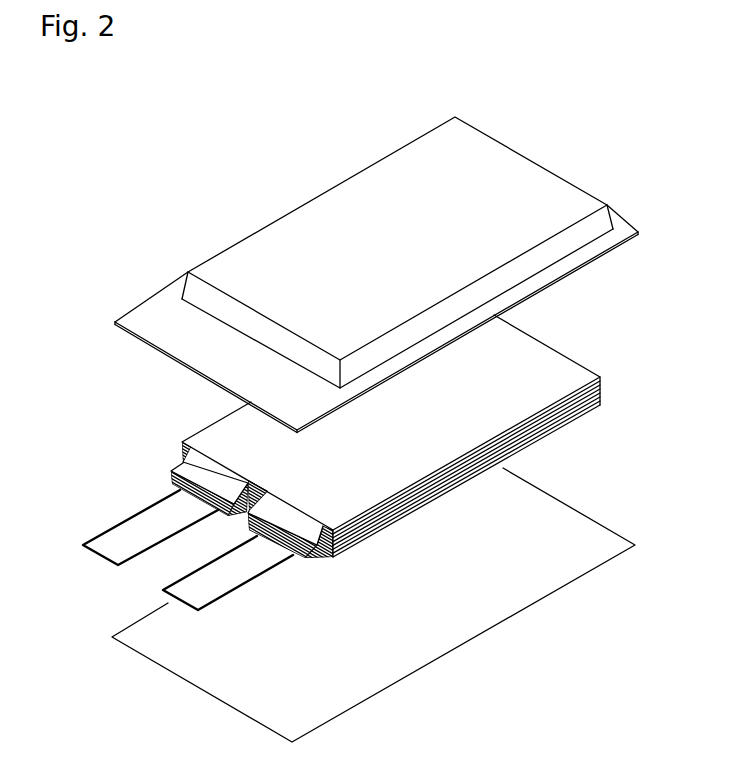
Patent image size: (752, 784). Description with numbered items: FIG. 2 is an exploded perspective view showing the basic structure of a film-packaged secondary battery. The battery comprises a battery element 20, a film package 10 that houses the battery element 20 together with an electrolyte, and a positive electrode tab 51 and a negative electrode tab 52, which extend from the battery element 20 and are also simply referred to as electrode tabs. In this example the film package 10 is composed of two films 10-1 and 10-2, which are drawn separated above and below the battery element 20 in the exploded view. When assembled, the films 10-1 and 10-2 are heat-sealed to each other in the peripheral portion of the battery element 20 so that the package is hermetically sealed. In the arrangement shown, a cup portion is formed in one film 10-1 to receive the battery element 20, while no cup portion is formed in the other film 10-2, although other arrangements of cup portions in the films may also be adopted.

The film package 10 is at (388, 267).
The film 10-1 is at (583, 196).
The film 10-2 is at (587, 572).
The battery element 20 is at (564, 341).
The positive electrode tab 51 is at (100, 537).
The negative electrode tab 52 is at (165, 590).